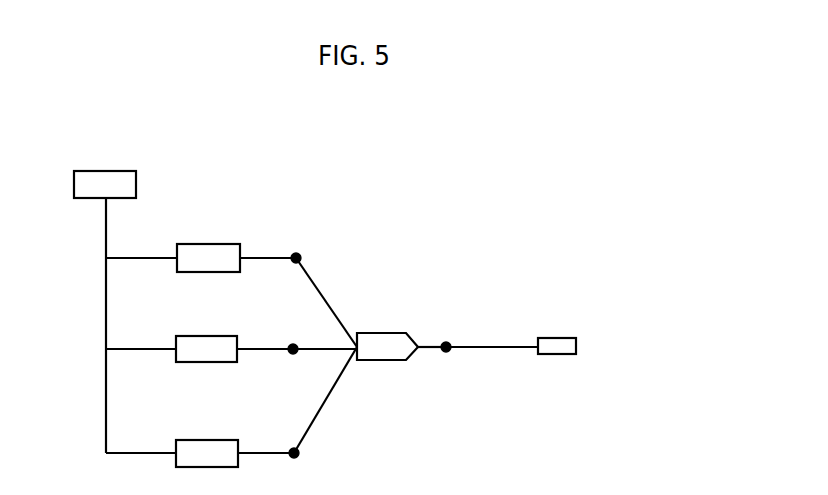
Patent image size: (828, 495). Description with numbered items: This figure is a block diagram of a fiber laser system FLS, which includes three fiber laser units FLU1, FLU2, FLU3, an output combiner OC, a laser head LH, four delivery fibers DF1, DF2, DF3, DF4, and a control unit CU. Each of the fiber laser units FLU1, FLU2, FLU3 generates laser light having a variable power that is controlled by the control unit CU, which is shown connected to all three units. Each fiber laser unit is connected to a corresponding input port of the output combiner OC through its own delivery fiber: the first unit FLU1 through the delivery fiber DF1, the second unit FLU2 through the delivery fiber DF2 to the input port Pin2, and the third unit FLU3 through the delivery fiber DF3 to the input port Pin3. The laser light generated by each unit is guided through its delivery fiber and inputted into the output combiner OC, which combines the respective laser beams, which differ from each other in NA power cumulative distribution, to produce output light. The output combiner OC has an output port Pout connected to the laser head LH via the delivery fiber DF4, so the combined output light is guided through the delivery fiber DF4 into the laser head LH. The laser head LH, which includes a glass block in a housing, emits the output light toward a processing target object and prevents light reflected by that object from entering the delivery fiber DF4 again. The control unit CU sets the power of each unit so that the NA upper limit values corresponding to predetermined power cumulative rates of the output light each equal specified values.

The fiber laser system FLS is at (546, 177).
The control unit CU is at (105, 170).
The fiber laser unit FLU1 is at (211, 244).
The fiber laser unit FLU2 is at (211, 335).
The fiber laser unit FLU3 is at (214, 440).
The delivery fiber DF1 is at (271, 257).
The delivery fiber DF2 is at (269, 348).
The delivery fiber DF3 is at (270, 452).
The delivery fiber DF4 is at (486, 346).
The input port Pin2 is at (320, 347).
The input port Pin3 is at (332, 390).
The output combiner OC is at (383, 333).
The output port Pout is at (436, 354).
The laser head LH is at (553, 339).